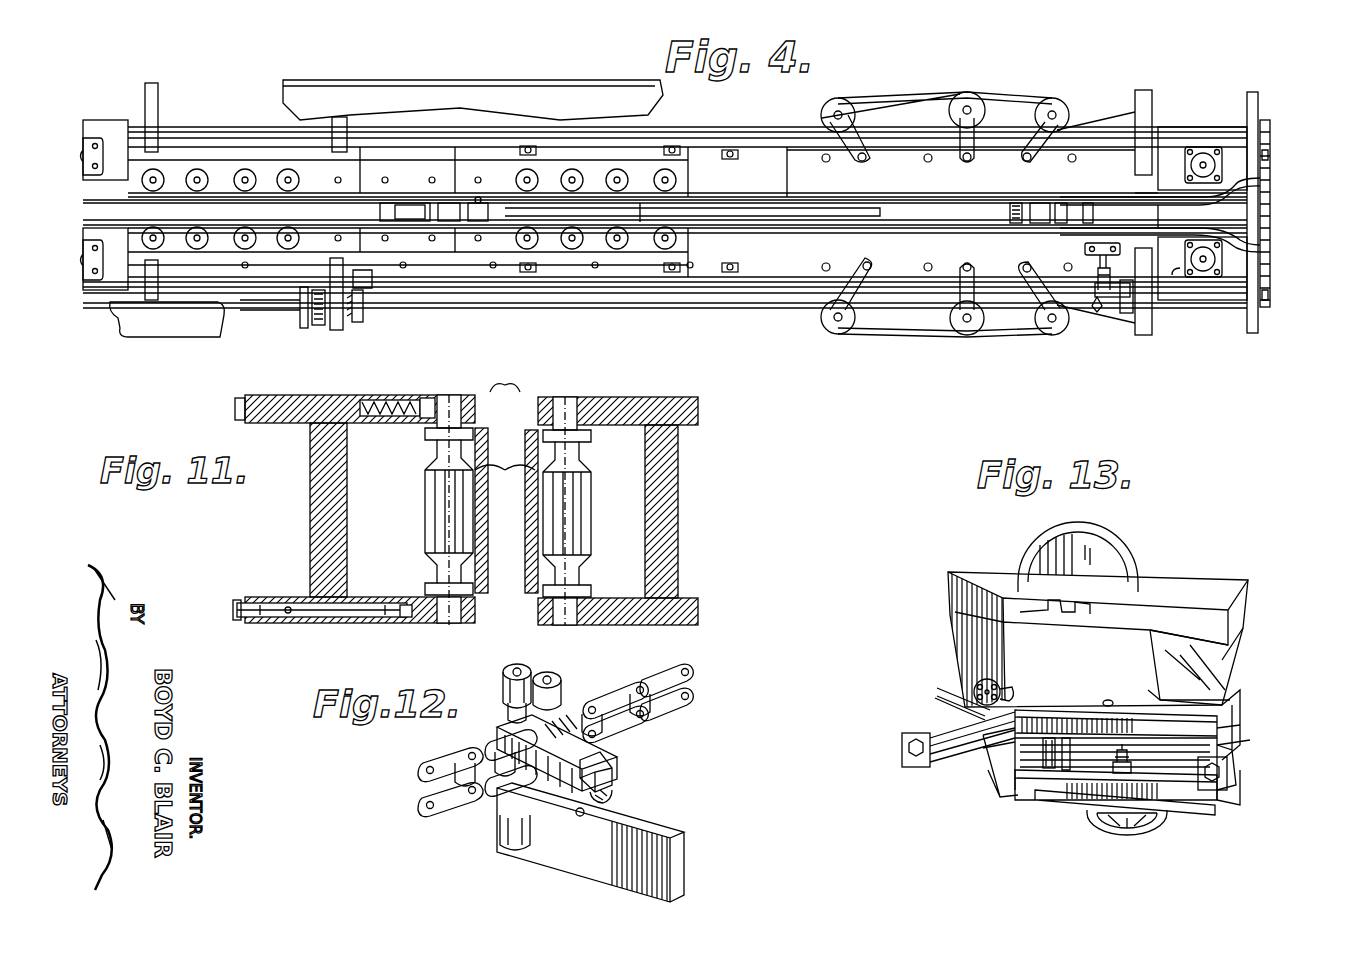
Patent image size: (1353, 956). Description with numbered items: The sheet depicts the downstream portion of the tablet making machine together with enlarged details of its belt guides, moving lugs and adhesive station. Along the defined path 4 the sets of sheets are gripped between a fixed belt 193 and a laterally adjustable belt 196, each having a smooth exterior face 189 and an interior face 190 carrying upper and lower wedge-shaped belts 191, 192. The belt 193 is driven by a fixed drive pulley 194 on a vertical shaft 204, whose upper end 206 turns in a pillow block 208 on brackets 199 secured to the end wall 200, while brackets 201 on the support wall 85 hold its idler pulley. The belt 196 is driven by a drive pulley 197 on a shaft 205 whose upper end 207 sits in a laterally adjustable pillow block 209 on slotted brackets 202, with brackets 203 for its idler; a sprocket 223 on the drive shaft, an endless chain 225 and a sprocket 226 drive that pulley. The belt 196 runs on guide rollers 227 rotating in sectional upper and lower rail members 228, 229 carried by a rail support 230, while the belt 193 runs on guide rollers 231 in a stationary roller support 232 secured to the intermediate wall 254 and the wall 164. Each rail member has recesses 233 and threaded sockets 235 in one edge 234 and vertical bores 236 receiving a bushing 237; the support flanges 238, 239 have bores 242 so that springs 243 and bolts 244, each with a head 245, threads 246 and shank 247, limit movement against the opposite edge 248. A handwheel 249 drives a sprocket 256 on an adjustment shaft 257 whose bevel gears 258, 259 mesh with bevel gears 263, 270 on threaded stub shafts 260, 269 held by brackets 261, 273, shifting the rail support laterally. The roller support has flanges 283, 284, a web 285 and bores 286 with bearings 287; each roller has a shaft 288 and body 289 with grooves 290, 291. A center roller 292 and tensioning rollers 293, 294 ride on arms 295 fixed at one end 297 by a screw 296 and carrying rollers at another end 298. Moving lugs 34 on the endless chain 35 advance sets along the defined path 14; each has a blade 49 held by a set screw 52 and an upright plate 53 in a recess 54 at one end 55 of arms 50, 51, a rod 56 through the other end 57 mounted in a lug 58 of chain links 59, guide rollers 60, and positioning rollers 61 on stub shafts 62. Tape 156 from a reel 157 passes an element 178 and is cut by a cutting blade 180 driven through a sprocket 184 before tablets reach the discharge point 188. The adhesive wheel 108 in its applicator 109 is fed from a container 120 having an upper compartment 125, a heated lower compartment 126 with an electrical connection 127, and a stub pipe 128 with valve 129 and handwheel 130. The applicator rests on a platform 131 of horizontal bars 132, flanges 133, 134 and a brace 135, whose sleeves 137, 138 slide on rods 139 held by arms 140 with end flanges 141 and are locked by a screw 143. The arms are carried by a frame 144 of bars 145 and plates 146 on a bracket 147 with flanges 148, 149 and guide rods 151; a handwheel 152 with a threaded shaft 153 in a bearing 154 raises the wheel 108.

In FIG. 11, the defined path 4 is at (506, 422).
In FIG. 4, the defined path 14 is at (935, 210).
In FIG. 12, the moving lug 34 is at (670, 885).
In FIG. 12, the endless chain 35 is at (423, 768).
In FIG. 12, the upright elongate blade 49 is at (670, 850).
In FIG. 12, the arm 50 is at (585, 760).
In FIG. 12, the arm 51 is at (580, 852).
In FIG. 12, the set screw 52 is at (582, 816).
In FIG. 12, the upright plate 53 is at (612, 790).
In FIG. 12, the recess 54 is at (612, 798).
In FIG. 12, the one end 55 is at (605, 766).
In FIG. 12, the elongate rod 56 is at (522, 770).
In FIG. 12, the other end 57 is at (572, 700).
In FIG. 12, the lug 58 is at (505, 782).
In FIG. 12, the chain link 59 is at (440, 815).
In FIG. 12, the guide roller 60 is at (560, 685).
In FIG. 12, the lug positioning roller 61 is at (503, 670).
In FIG. 12, the stub shaft 62 is at (507, 716).
In FIG. 4, the support wall 85 is at (150, 296).
In FIG. 4, the adhesive wheel 108 is at (405, 205).
In FIG. 13, the adhesive wheel 108 is at (1115, 548).
In FIG. 4, the adhesive applicator 109 is at (447, 205).
In FIG. 13, the container 120 is at (958, 625).
In FIG. 13, the upper compartment 125 is at (1215, 596).
In FIG. 13, the lower compartment 126 is at (1185, 660).
In FIG. 4, the electrical connection 127 is at (484, 205).
In FIG. 13, the stub pipe 128 is at (1014, 690).
In FIG. 13, the valve 129 is at (1000, 680).
In FIG. 13, the handwheel 130 is at (975, 682).
In FIG. 13, the platform 131 is at (1172, 720).
In FIG. 13, the horizontal bar 132 is at (1177, 748).
In FIG. 13, the depending end flange 133 is at (1245, 690).
In FIG. 13, the depending end flange 134 is at (940, 755).
In FIG. 13, the brace member 135 is at (1108, 700).
In FIG. 13, the tubular sleeve 137 is at (942, 702).
In FIG. 13, the tubular sleeve 138 is at (1242, 727).
In FIG. 13, the elongate cylindrical rod 139 is at (925, 722).
In FIG. 13, the arm 140 is at (905, 755).
In FIG. 13, the upstanding end flange 141 is at (902, 737).
In FIG. 13, the screw 143 is at (1250, 740).
In FIG. 13, the frame 144 is at (996, 782).
In FIG. 13, the bar 145 is at (1217, 795).
In FIG. 13, the plate 146 is at (992, 758).
In FIG. 13, the bracket 147 is at (1178, 808).
In FIG. 13, the outstanding flange 148 is at (1066, 740).
In FIG. 13, the outstanding flange 149 is at (1227, 764).
In FIG. 13, the guide rod 151 is at (1055, 746).
In FIG. 13, the handwheel 152 is at (1122, 828).
In FIG. 13, the threaded shaft 153 is at (1142, 745).
In FIG. 13, the internally threaded bearing 154 is at (1112, 768).
In FIG. 4, the tape 156 is at (690, 215).
In FIG. 4, the reel 157 is at (518, 225).
In FIG. 4, the wall or support 164 is at (1148, 92).
In FIG. 4, the shaft 178 is at (848, 205).
In FIG. 4, the cutting blade 180 is at (1043, 205).
In FIG. 4, the sprocket 184 is at (1010, 213).
In FIG. 4, the discharge point 188 is at (1247, 214).
In FIG. 4, the exterior face 189 is at (312, 205).
In FIG. 11, the exterior face 189 is at (505, 454).
In FIG. 4, the interior face 190 is at (782, 300).
In FIG. 11, the interior face 190 is at (570, 520).
In FIG. 4, the wedge-shaped belt 191 is at (880, 300).
In FIG. 11, the wedge-shaped belt 191 is at (580, 457).
In FIG. 11, the wedge-shaped belt 192 is at (540, 572).
In FIG. 4, the belt 193 is at (738, 130).
In FIG. 11, the belt 193 is at (525, 590).
In FIG. 4, the fixed drive pulley 194 is at (1262, 183).
In FIG. 4, the belt 196 is at (925, 322).
In FIG. 11, the belt 196 is at (488, 525).
In FIG. 4, the drive pulley 197 is at (1193, 232).
In FIG. 4, the bracket 199 is at (1162, 138).
In FIG. 4, the end wall 200 is at (1258, 328).
In FIG. 4, the bracket 201 is at (122, 124).
In FIG. 4, the bracket 202 is at (1200, 300).
In FIG. 4, the bracket 203 is at (105, 288).
In FIG. 4, the vertical shaft 204 is at (1205, 165).
In FIG. 11, the vertical shaft 204 is at (345, 610).
In FIG. 4, the vertical shaft 205 is at (1210, 262).
In FIG. 4, the upper end 206 is at (1203, 160).
In FIG. 4, the upper end 207 is at (1200, 258).
In FIG. 4, the pillow block 208 is at (1170, 181).
In FIG. 4, the pillow block 209 is at (1175, 278).
In FIG. 4, the sprocket 223 is at (1272, 132).
In FIG. 4, the endless chain 225 is at (1270, 155).
In FIG. 4, the sprocket 226 is at (1270, 298).
In FIG. 4, the guide roller 227 is at (240, 245).
In FIG. 11, the guide roller 227 is at (430, 514).
In FIG. 4, the upper rail member 228 is at (305, 230).
In FIG. 11, the upper rail member 228 is at (437, 396).
In FIG. 4, the lower rail member 229 is at (225, 165).
In FIG. 11, the lower rail member 229 is at (488, 620).
In FIG. 11, the rail support 230 is at (310, 542).
In FIG. 4, the guide roller 231 is at (197, 170).
In FIG. 11, the guide roller 231 is at (578, 490).
In FIG. 11, the roller support 232 is at (680, 597).
In FIG. 11, the horizontal circular recess 233 is at (418, 418).
In FIG. 11, the one edge 234 is at (405, 640).
In FIG. 11, the horizontal threaded socket 235 is at (430, 595).
In FIG. 11, the vertical bore 236 is at (455, 398).
In FIG. 11, the bushing 237 is at (543, 398).
In FIG. 11, the upper flange 238 is at (262, 402).
In FIG. 11, the lower flange 239 is at (345, 620).
In FIG. 11, the bore 242 is at (288, 618).
In FIG. 11, the helical compression spring 243 is at (392, 398).
In FIG. 11, the bolt 244 is at (245, 422).
In FIG. 11, the head 245 is at (235, 404).
In FIG. 11, the threads 246 is at (402, 618).
In FIG. 11, the shank 247 is at (272, 606).
In FIG. 11, the opposite edge 248 is at (238, 620).
In FIG. 4, the handwheel 249 is at (300, 322).
In FIG. 4, the intermediate wall 254 is at (343, 128).
In FIG. 4, the sprocket 256 is at (300, 305).
In FIG. 4, the elongate adjustment shaft 257 is at (732, 312).
In FIG. 4, the bevel gear 258 is at (360, 315).
In FIG. 4, the bevel gear 259 is at (1115, 322).
In FIG. 4, the threaded stub shaft 260 is at (360, 270).
In FIG. 4, the bracket 261 is at (390, 270).
In FIG. 4, the bevel gear 263 is at (380, 288).
In FIG. 4, the threaded stub shaft 269 is at (1090, 262).
In FIG. 4, the bevel gear 270 is at (1130, 310).
In FIG. 4, the bracket 273 is at (1108, 232).
In FIG. 11, the upper flange 283 is at (698, 425).
In FIG. 11, the lower flange 284 is at (698, 620).
In FIG. 11, the vertical web 285 is at (678, 512).
In FIG. 11, the vertical bore 286 is at (575, 398).
In FIG. 11, the bushing or bearing 287 is at (590, 598).
In FIG. 11, the elongate shaft 288 is at (455, 625).
In FIG. 11, the body portion 289 is at (580, 546).
In FIG. 11, the wedge-shaped groove 290 is at (437, 458).
In FIG. 11, the wedge-shaped groove 291 is at (437, 565).
In FIG. 4, the center roller 292 is at (957, 335).
In FIG. 4, the tensioning roller 293 is at (833, 335).
In FIG. 4, the tensioning roller 294 is at (1048, 330).
In FIG. 4, the arm 295 is at (975, 135).
In FIG. 4, the bolt or screw 296 is at (868, 160).
In FIG. 4, the one end 297 is at (975, 272).
In FIG. 4, the another end 298 is at (858, 135).